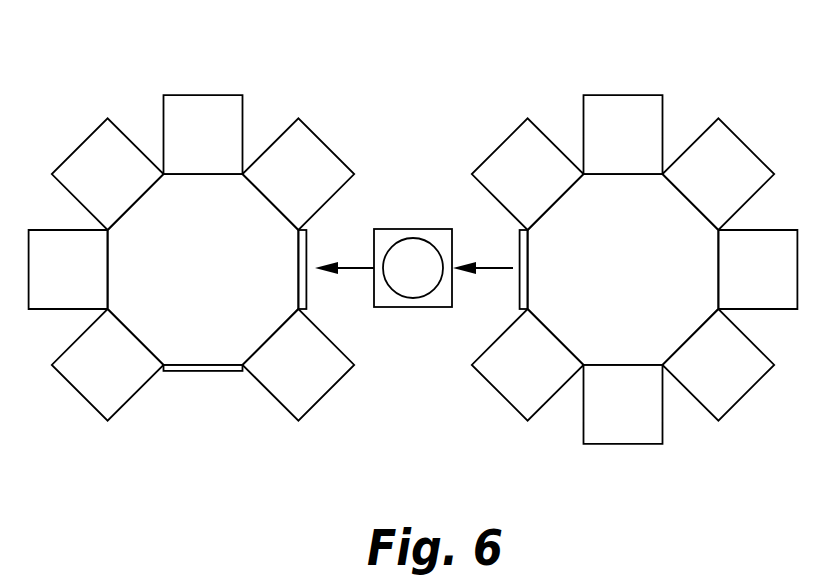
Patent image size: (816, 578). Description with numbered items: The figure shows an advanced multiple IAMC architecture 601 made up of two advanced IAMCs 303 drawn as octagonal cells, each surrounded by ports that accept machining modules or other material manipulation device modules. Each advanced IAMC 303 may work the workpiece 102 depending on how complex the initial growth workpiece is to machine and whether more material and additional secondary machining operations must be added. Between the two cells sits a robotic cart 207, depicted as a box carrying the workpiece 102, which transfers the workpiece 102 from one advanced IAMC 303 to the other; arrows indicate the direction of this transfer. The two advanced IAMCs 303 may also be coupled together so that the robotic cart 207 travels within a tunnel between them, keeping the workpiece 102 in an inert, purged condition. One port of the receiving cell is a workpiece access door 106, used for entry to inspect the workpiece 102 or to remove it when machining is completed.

The advanced multiple IAMC architecture 601 is at (446, 76).
The advanced IAMC 303 is at (223, 282).
The workpiece access door 106 is at (217, 371).
The robotic cart 207 is at (435, 307).
The workpiece 102 is at (435, 283).